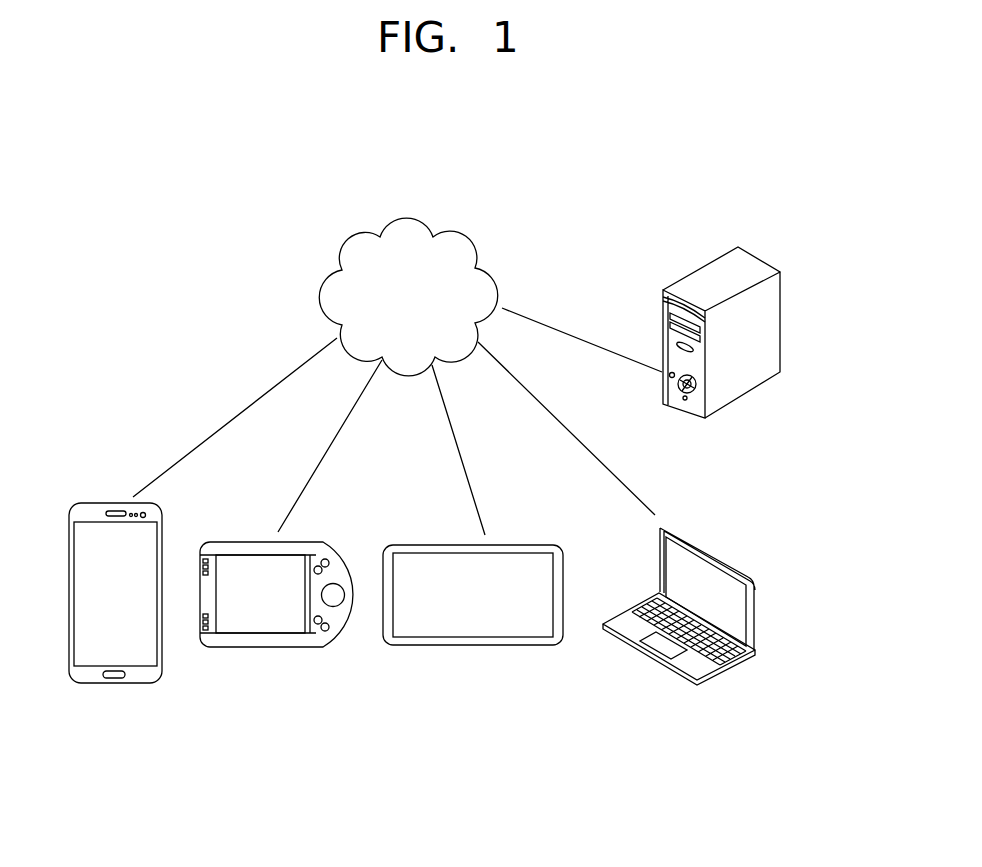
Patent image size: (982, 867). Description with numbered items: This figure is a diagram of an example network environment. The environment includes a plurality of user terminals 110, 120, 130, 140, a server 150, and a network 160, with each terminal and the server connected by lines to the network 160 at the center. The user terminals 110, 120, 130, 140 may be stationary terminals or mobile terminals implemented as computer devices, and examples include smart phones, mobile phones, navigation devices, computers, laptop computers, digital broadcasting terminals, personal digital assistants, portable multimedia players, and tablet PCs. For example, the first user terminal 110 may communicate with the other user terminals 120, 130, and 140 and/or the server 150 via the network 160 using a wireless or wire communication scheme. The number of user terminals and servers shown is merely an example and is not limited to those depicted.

The first user terminal 110 is at (113, 684).
The user terminal 120 is at (263, 648).
The user terminal 130 is at (472, 646).
The user terminal 140 is at (755, 614).
The server 150 is at (781, 321).
The network 160 is at (408, 214).